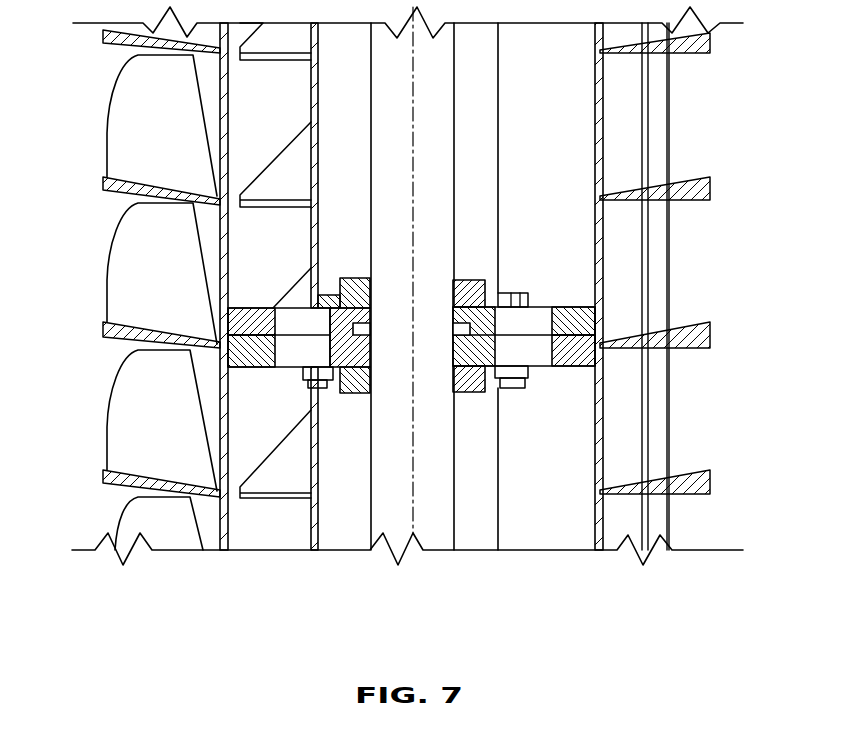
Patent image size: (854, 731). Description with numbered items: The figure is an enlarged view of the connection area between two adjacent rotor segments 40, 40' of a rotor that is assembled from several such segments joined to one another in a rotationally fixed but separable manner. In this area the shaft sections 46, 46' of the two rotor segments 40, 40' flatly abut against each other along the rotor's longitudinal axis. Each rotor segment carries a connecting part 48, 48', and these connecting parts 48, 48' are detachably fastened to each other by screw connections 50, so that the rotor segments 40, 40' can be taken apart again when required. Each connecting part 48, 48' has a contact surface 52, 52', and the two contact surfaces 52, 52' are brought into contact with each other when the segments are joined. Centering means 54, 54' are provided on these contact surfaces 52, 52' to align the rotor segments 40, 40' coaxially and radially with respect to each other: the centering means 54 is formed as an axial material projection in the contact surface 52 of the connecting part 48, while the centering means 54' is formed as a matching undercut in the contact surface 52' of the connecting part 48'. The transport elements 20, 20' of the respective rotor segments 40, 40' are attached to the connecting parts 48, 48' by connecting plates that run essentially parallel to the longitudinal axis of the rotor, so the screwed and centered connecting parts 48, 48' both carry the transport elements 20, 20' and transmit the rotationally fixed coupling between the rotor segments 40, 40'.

The transport element 20 is at (126, 125).
The transport element 20' is at (706, 508).
The rotor segment 40 is at (693, 315).
The rotor segment 40' is at (504, 286).
The shaft section 46 is at (469, 501).
The shaft section 46' is at (515, 165).
The connecting part 48 is at (649, 382).
The connecting part 48' is at (652, 294).
The screw connection 50 is at (302, 372).
The contact surface 52 is at (163, 285).
The contact surface 52' is at (160, 386).
The centering means 54 is at (376, 403).
The centering means 54' is at (305, 263).